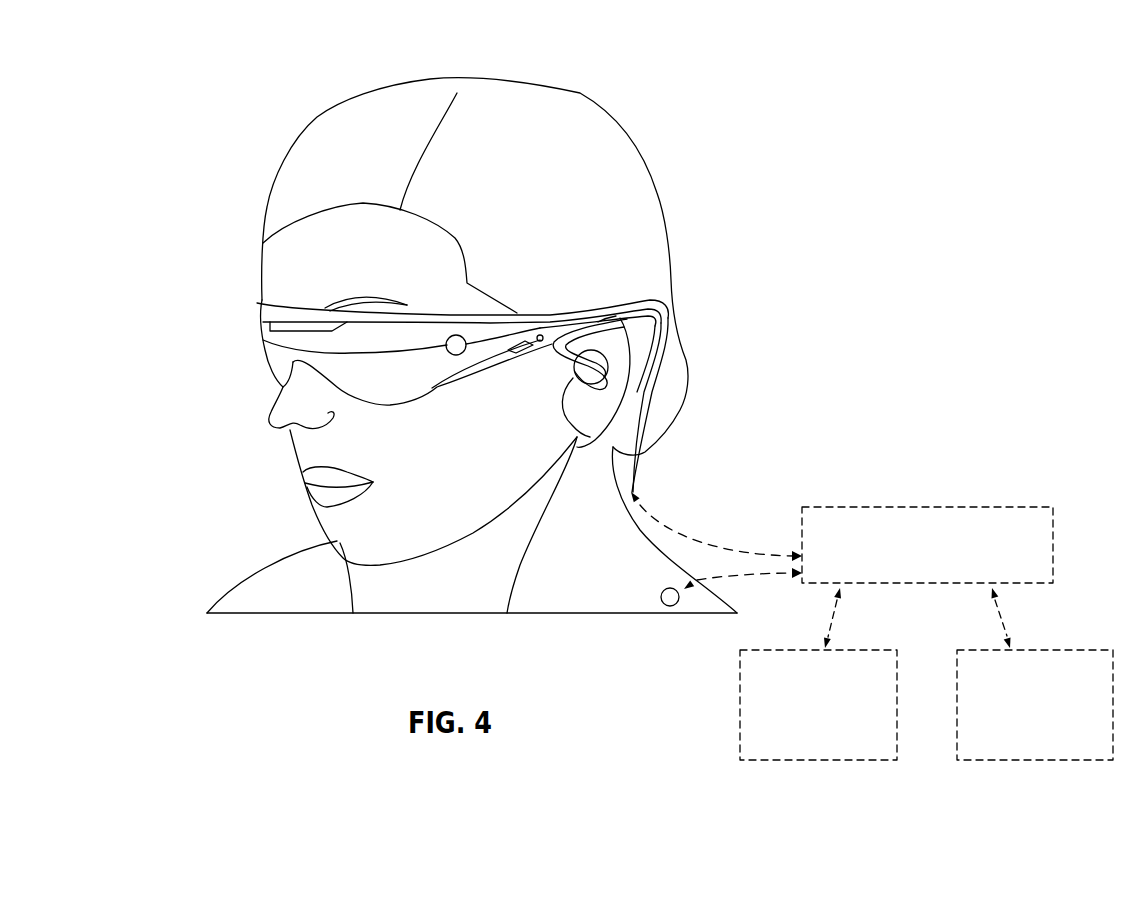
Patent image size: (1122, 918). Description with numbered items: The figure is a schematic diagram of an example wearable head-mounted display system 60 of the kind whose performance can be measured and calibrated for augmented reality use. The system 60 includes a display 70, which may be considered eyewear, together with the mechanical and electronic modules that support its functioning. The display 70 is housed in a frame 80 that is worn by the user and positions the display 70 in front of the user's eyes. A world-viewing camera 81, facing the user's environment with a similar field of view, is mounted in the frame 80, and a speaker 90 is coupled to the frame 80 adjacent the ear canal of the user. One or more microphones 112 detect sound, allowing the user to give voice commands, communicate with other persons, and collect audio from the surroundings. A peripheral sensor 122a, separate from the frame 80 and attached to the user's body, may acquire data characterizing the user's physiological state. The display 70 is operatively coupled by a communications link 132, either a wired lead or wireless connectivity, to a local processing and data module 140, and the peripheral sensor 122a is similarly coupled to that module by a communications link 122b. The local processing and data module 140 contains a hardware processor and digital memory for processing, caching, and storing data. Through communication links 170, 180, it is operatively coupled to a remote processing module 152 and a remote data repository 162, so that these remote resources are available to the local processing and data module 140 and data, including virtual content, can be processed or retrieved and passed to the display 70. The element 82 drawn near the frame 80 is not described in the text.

The head-mounted display system 60 is at (745, 33).
The display 70 is at (280, 360).
The frame 80 is at (540, 320).
The world-viewing camera 81 is at (457, 335).
The speaker 82 is at (608, 320).
The speaker 90 is at (363, 137).
The microphone 112 is at (543, 335).
The communications link 132 is at (667, 527).
The peripheral sensor 122a is at (673, 607).
The communications link 122b is at (737, 570).
The local processing and data module 140 is at (910, 505).
The remote processing module 152 is at (815, 762).
The remote data repository 162 is at (1040, 762).
The communication link 170 is at (835, 610).
The communication link 180 is at (1000, 617).